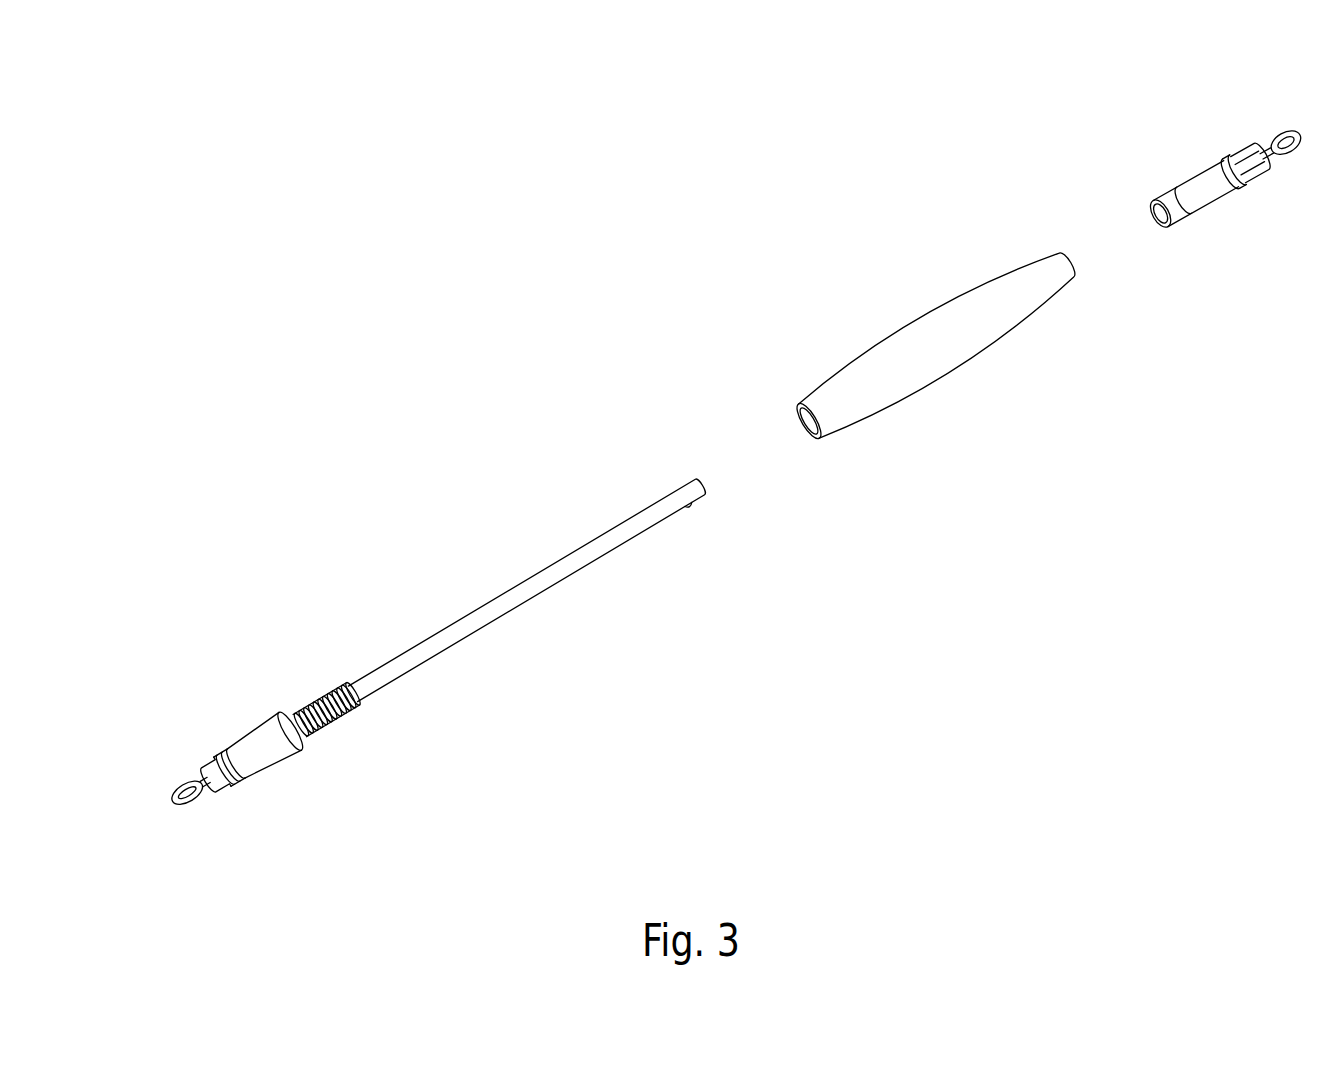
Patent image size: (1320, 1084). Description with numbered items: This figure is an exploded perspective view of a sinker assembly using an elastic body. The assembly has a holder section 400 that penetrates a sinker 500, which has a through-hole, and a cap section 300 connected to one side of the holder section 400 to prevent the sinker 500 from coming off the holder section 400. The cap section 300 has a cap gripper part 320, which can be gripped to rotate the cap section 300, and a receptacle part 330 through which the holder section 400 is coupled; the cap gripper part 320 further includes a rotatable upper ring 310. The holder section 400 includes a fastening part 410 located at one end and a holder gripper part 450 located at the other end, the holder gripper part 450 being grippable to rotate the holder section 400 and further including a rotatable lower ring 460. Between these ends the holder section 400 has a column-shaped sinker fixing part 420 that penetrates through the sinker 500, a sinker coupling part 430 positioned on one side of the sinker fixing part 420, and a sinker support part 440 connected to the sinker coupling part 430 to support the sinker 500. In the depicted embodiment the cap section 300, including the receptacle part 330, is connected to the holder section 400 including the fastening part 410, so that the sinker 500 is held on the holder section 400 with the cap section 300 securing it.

The cap section 300 is at (1212, 138).
The upper ring 310 is at (1286, 153).
The cap gripper part 320 is at (1243, 172).
The receptacle part 330 is at (1200, 200).
The holder section 400 is at (543, 543).
The fastening part 410 is at (688, 505).
The sinker fixing part 420 is at (525, 600).
The sinker coupling part 430 is at (336, 727).
The sinker support part 440 is at (273, 758).
The holder gripper part 450 is at (215, 786).
The lower ring 460 is at (172, 792).
The sinker 500 is at (940, 285).